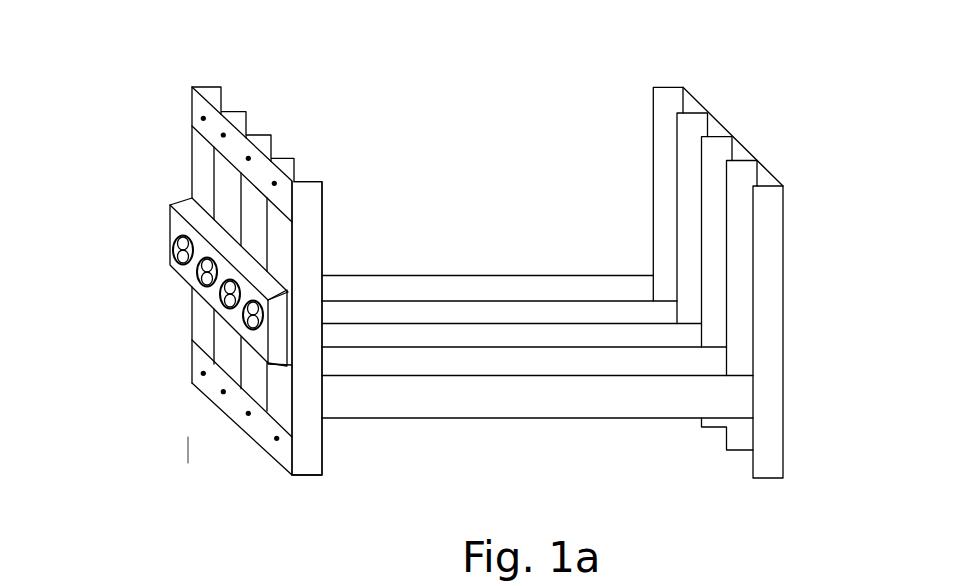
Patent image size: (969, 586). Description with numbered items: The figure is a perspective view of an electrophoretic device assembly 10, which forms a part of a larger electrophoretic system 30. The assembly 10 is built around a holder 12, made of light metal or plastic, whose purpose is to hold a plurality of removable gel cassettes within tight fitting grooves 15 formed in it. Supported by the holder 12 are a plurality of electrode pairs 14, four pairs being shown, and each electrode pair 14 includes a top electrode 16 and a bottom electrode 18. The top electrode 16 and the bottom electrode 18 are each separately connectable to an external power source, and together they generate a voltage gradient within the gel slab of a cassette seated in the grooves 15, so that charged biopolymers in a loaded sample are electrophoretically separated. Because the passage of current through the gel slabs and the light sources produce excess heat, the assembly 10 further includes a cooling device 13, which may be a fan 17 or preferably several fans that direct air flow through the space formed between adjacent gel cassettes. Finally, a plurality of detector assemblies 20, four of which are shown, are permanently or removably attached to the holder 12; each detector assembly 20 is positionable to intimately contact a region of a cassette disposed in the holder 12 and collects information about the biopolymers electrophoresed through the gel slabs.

The assembly 10 is at (801, 22).
The holder 12 is at (782, 393).
The cooling device 13 is at (168, 228).
The electrode pairs 14 is at (192, 383).
The tight fitting grooves 15 is at (312, 170).
The top electrode 16 is at (203, 117).
The fan 17 is at (243, 314).
The bottom electrode 18 is at (203, 374).
The detector assemblies 20 is at (408, 313).
The system 30 is at (873, 193).